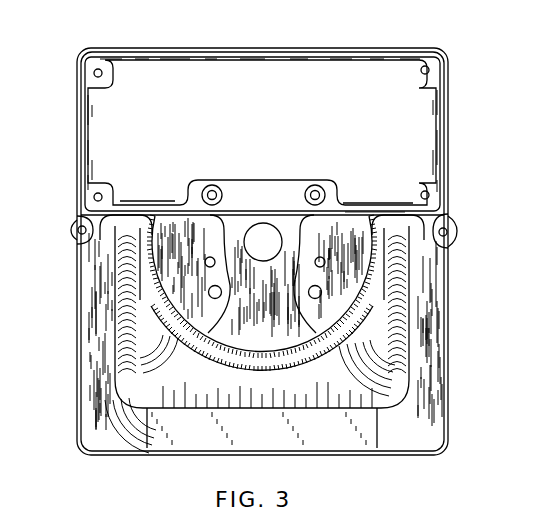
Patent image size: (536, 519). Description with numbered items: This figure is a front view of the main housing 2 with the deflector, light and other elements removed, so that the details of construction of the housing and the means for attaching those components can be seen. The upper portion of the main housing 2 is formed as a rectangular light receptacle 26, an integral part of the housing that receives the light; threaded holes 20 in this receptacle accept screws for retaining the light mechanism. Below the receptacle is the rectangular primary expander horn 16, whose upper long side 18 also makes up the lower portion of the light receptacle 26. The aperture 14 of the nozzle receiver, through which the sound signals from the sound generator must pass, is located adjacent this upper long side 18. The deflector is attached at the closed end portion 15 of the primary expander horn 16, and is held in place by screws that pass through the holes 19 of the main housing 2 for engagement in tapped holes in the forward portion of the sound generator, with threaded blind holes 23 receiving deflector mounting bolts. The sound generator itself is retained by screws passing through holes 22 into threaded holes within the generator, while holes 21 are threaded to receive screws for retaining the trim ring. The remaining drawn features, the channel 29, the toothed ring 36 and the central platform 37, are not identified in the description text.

The main housing 2 is at (77, 288).
The aperture 14 is at (270, 226).
The closed end portion 15 is at (137, 207).
The primary expander horn 16 is at (258, 48).
The upper long side 18 is at (373, 210).
The holes 19 is at (322, 291).
The holes 20 is at (428, 63).
The holes 21 is at (450, 227).
The holes 22 is at (213, 193).
The threaded blind holes 23 is at (325, 262).
The light receptacle 26 is at (317, 60).
The left channel 29 is at (183, 265).
The annular toothed ring 36 is at (357, 322).
The central platform 37 is at (263, 317).